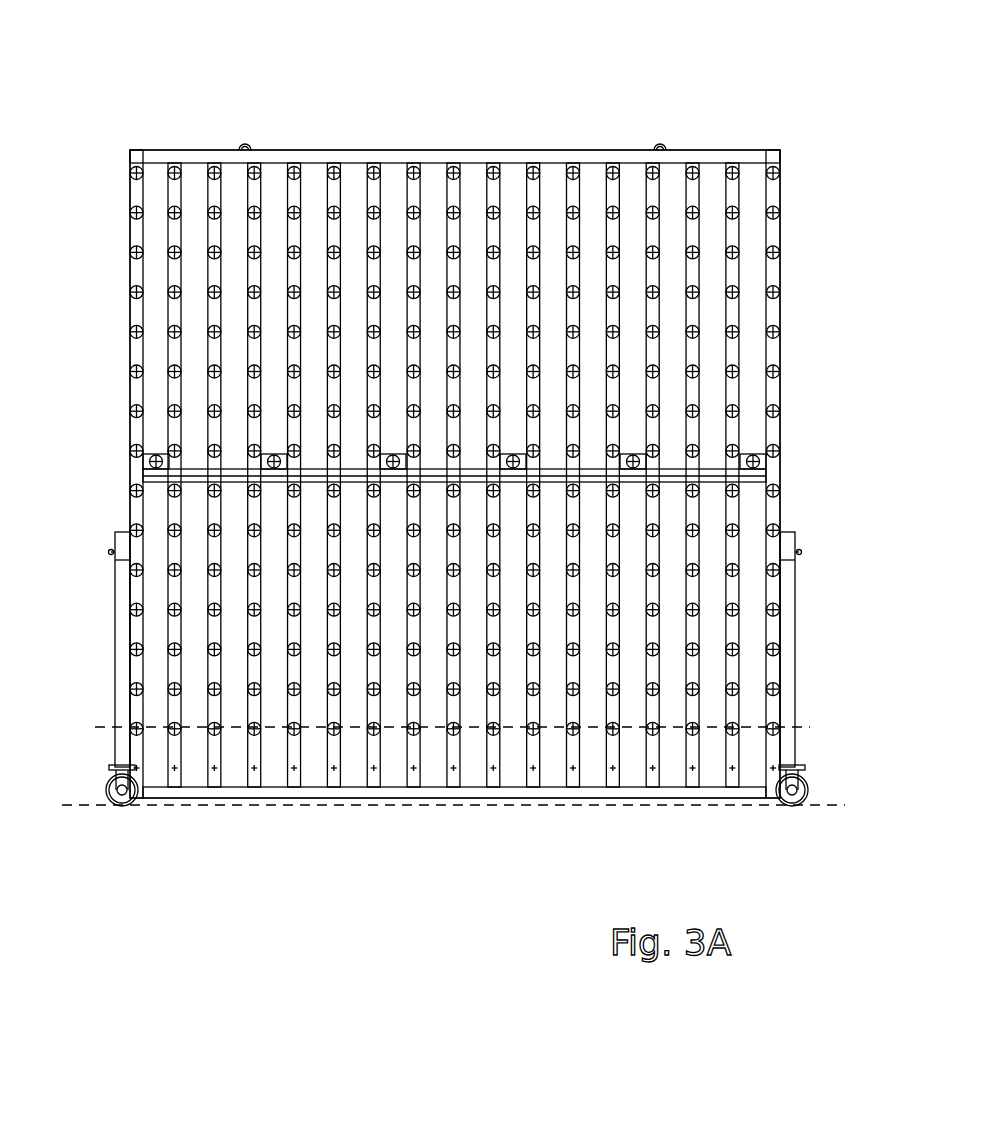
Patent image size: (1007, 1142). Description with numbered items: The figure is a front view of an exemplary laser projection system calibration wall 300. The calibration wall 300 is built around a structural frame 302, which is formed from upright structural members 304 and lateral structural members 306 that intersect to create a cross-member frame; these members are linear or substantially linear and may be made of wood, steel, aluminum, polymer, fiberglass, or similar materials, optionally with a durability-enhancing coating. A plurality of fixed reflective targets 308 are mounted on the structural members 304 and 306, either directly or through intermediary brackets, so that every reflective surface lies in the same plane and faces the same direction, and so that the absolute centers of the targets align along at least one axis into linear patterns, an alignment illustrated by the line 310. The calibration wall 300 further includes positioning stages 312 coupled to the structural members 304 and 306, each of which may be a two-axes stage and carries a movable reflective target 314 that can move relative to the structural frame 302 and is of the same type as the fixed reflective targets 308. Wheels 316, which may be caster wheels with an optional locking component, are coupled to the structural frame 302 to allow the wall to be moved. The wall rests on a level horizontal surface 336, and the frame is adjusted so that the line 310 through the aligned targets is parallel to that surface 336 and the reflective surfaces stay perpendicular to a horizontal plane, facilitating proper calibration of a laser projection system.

The laser projection system calibration wall 300 is at (146, 33).
The structural frame 302 is at (728, 83).
The upright structural member 304 is at (128, 350).
The lateral structural member 306 is at (385, 156).
The fixed reflective target 308 is at (130, 292).
The line 310 is at (798, 727).
The positioning stage 312 is at (150, 452).
The movable reflective target 314 is at (145, 472).
The wheel 316 is at (110, 777).
The level horizontal surface 336 is at (85, 810).